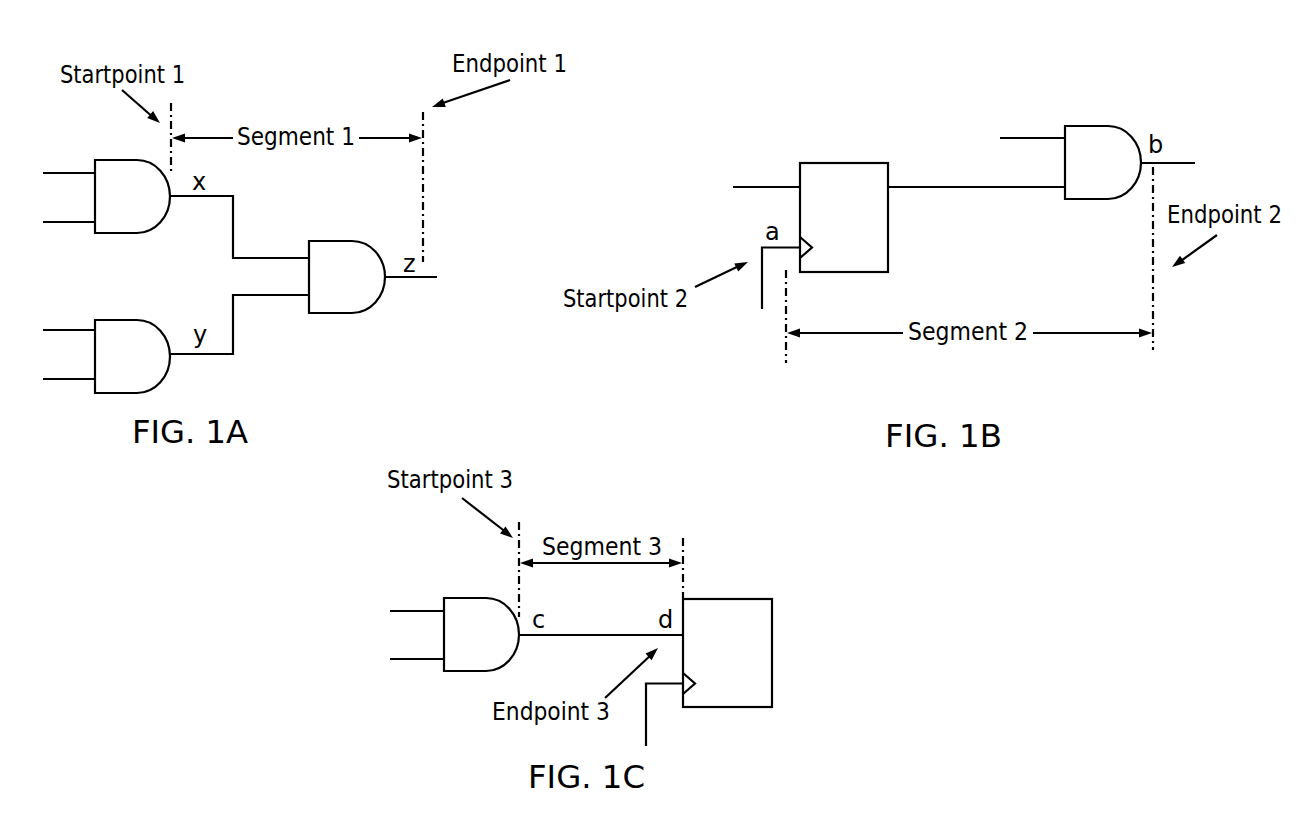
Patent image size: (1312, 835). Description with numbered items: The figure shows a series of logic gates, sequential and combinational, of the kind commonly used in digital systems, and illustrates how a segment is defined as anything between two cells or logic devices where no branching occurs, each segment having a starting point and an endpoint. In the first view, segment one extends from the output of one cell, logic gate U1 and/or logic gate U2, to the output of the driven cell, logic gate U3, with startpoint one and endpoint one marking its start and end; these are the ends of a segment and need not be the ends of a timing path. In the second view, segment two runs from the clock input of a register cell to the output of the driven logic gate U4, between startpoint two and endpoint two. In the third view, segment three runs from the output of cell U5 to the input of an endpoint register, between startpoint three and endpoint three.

In FIG. 1A, the logic gate U1 is at (106, 196).
In FIG. 1A, the logic gate U2 is at (106, 356).
In FIG. 1A, the logic gate U3 is at (373, 277).
In FIG. 1B, the logic gate U4 is at (1097, 162).
In FIG. 1C, the logic gate U5 is at (454, 634).